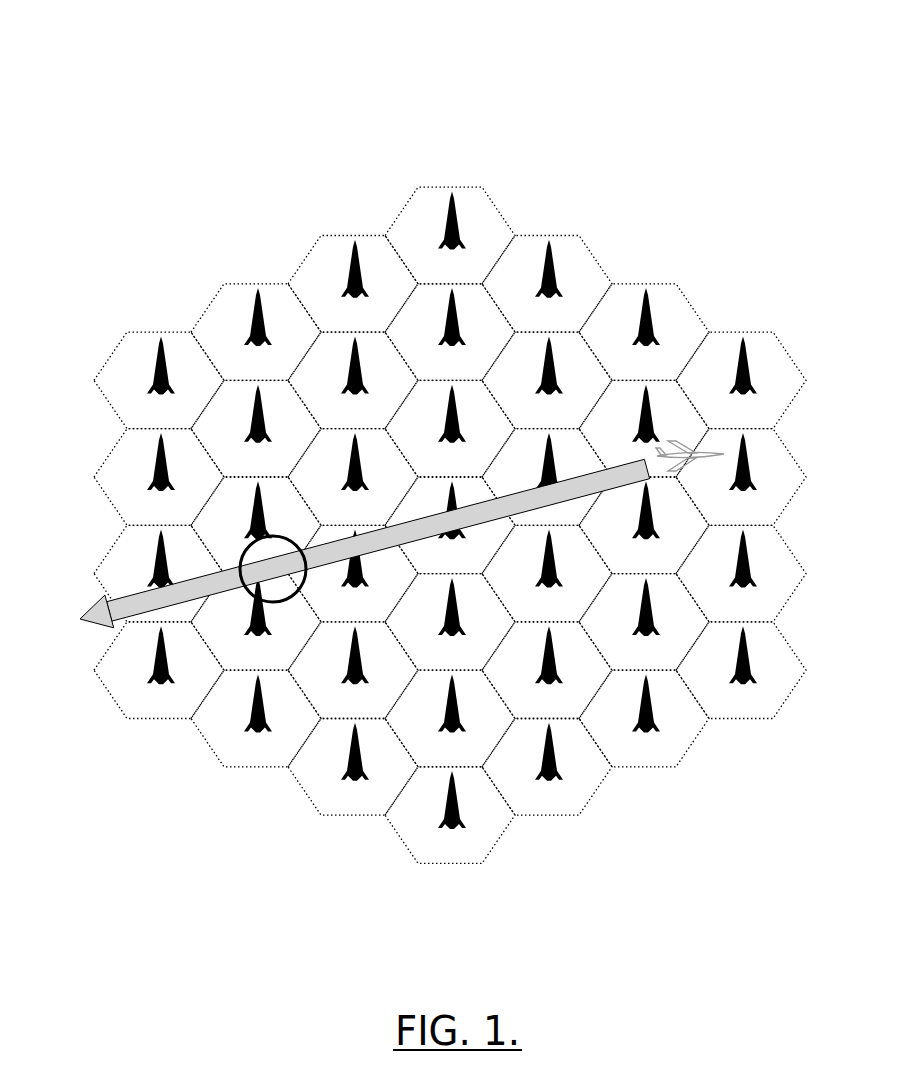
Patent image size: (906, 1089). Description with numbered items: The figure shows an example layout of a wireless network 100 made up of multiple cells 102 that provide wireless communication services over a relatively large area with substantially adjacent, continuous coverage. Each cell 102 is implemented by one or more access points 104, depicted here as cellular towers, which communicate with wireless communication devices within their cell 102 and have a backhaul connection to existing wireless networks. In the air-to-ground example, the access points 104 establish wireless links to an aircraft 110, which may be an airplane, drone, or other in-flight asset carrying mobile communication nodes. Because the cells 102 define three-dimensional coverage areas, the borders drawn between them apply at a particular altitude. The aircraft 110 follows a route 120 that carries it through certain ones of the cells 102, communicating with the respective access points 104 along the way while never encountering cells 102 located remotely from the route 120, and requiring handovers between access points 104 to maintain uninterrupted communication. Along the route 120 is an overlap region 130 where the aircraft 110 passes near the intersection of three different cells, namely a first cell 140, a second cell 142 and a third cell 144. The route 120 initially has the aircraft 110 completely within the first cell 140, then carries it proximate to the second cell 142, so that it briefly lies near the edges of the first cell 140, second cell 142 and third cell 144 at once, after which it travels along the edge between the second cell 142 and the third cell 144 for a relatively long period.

The wireless network 100 is at (695, 58).
The cell 102 is at (452, 186).
The access point 104 is at (463, 218).
The aircraft 110 is at (692, 450).
The route 120 is at (133, 600).
The overlap region 130 is at (242, 547).
The first cell 140 is at (395, 622).
The second cell 142 is at (309, 505).
The third cell 144 is at (295, 663).